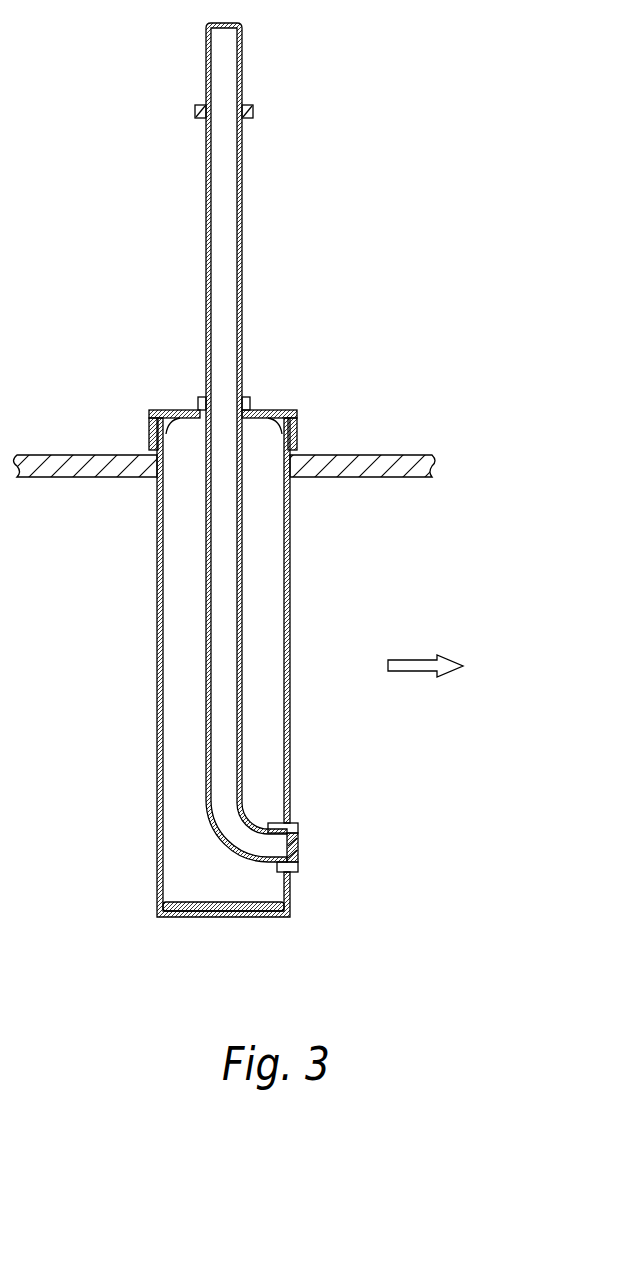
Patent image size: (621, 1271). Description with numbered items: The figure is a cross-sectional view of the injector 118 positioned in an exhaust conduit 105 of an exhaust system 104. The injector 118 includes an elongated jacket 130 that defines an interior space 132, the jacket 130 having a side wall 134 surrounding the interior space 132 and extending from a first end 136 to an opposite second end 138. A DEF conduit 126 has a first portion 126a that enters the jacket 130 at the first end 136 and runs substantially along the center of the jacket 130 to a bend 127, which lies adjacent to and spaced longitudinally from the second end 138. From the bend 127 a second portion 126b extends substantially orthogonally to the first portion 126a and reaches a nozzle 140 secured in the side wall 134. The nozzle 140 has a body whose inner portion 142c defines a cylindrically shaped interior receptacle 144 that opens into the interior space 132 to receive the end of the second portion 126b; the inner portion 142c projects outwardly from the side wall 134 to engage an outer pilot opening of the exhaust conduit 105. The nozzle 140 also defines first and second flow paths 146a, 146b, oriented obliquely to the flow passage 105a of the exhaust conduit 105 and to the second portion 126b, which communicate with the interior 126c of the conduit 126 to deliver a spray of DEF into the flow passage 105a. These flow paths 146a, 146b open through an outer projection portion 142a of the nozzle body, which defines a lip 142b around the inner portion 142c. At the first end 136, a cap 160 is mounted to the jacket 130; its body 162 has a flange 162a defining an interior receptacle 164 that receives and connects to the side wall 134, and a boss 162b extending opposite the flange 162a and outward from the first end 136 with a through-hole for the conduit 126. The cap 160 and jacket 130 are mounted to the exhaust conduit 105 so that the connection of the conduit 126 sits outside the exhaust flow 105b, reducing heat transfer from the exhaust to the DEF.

The exhaust system 104 is at (428, 438).
The exhaust conduit 105 is at (414, 469).
The flow passage 105a is at (428, 550).
The exhaust flow 105b is at (408, 657).
The injector 118 is at (369, 291).
The conduit 126 is at (248, 179).
The first portion 126a is at (244, 546).
The second portion 126b is at (258, 870).
The interior of conduit 126c is at (227, 692).
The bend 127 is at (222, 850).
The jacket 130 is at (300, 620).
The interior space 132 is at (180, 690).
The side wall 134 is at (156, 655).
The first end 136 is at (175, 430).
The second end 138 is at (157, 912).
The nozzle 140 is at (279, 815).
The outer projection portion 142a is at (299, 847).
The lip 142b is at (294, 874).
The inner portion 142c is at (300, 874).
The interior receptacle 144 is at (280, 872).
The first flow path 146a is at (298, 838).
The second flow path 146b is at (300, 858).
The cap 160 is at (302, 422).
The body 162 is at (148, 416).
The flange 162a is at (148, 447).
The boss 162b is at (252, 400).
The interior receptacle 164 is at (287, 418).